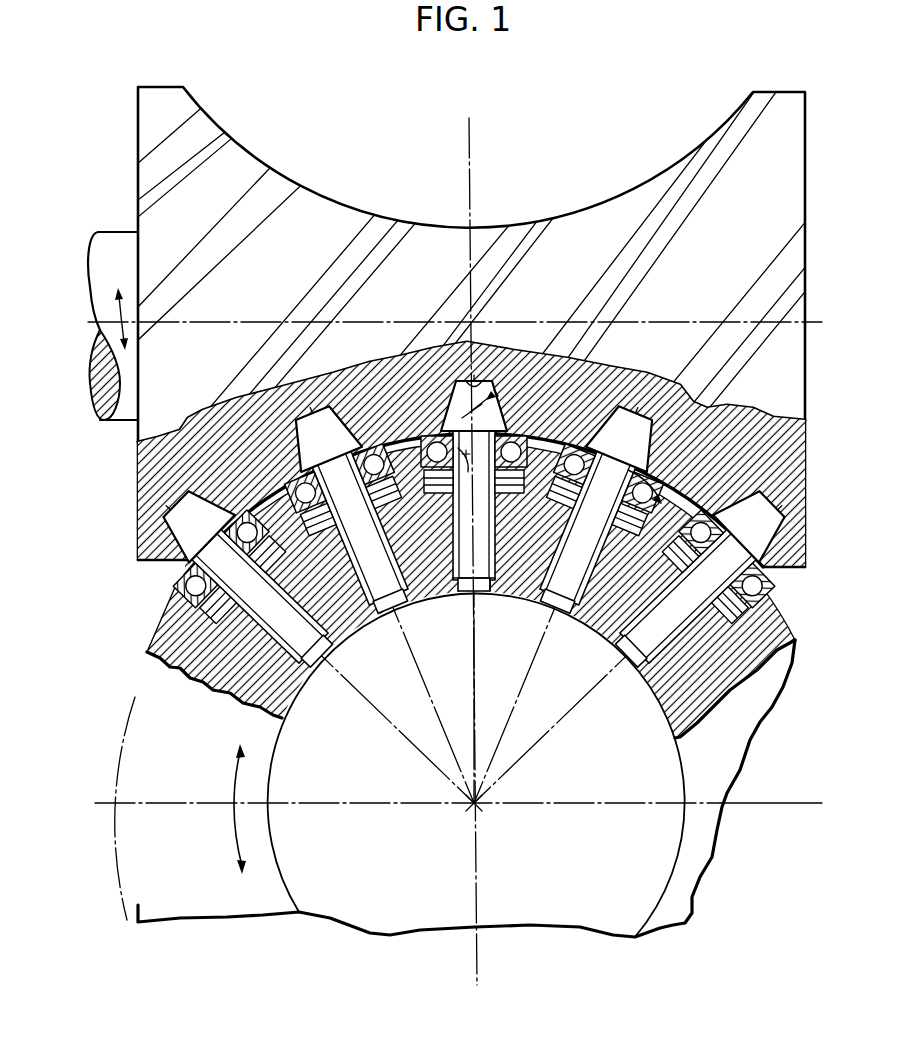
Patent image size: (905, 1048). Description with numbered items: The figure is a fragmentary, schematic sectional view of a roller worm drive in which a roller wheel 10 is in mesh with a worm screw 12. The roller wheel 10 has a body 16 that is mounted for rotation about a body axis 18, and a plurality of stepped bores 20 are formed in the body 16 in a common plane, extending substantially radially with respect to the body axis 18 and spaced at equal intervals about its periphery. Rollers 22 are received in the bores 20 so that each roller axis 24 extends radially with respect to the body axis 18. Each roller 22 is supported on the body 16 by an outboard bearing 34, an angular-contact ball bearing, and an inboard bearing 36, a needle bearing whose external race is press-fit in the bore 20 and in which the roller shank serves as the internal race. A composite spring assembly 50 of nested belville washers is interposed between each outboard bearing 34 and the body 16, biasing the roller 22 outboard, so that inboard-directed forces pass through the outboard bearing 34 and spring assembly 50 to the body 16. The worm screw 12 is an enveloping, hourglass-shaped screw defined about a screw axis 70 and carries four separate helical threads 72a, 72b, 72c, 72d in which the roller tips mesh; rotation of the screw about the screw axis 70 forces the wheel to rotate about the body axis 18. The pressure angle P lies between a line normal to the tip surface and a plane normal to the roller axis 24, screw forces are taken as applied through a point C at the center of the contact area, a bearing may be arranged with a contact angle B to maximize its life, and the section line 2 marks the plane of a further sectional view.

The roller wheel 10 is at (133, 690).
The worm screw 12 is at (282, 177).
The body 16 is at (180, 620).
The body axis 18 is at (470, 808).
The stepped bores 20 is at (665, 705).
The rollers 22 is at (322, 662).
The roller axis 24 is at (193, 505).
The outboard bearing 34 is at (716, 400).
The inboard bearing 36 is at (540, 587).
The composite spring assembly 50 is at (742, 413).
The screw axis 70 is at (97, 327).
The helical thread 72a is at (172, 524).
The helical thread 72b is at (641, 398).
The helical thread 72c is at (462, 380).
The helical thread 72d is at (300, 424).
The section line 2- 2 is at (463, 138).
The contact angle B is at (471, 473).
The pressure angle P is at (488, 399).
The point C is at (497, 392).